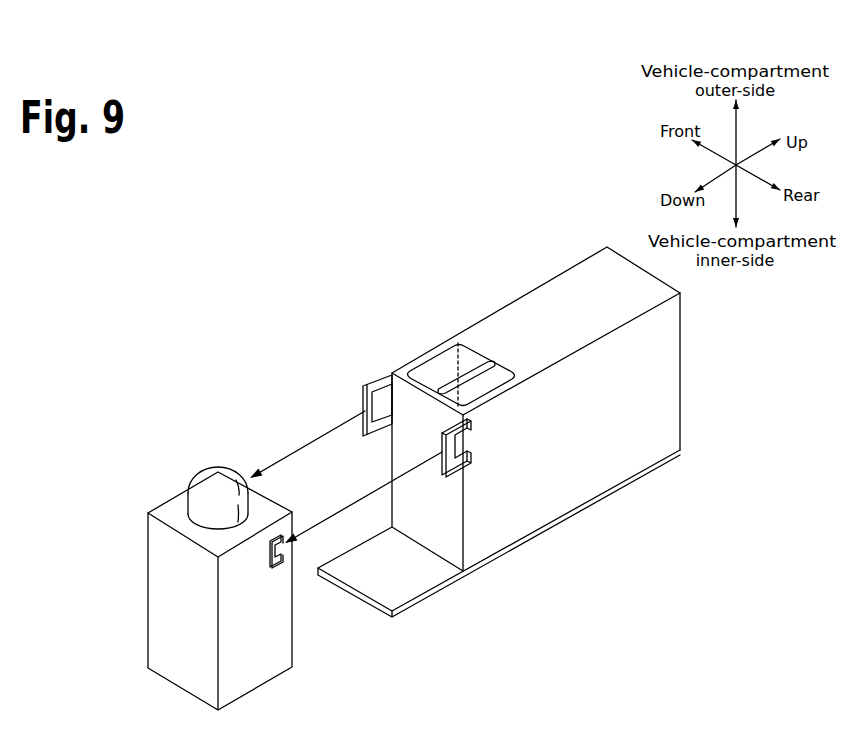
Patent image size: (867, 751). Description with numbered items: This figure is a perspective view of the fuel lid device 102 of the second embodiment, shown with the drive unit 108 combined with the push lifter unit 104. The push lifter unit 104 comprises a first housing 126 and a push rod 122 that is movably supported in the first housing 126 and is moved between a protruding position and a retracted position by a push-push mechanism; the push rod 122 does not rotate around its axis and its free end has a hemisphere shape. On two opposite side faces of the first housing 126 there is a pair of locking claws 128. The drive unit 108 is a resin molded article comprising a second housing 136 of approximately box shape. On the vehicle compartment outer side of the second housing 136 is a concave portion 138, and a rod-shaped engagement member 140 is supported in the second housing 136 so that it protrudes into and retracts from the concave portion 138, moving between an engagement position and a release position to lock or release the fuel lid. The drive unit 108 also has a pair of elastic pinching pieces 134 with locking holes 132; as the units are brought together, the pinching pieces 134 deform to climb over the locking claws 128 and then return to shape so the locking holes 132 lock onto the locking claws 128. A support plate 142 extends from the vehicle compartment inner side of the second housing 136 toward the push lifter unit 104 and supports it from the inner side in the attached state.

The fuel lid device 102 is at (303, 284).
The push lifter unit 104 is at (213, 450).
The drive unit 108 is at (403, 338).
The push rod 122 is at (207, 482).
The first housing 126 is at (162, 600).
The locking claws 128 is at (280, 566).
The locking holes 132 is at (383, 385).
The pinching pieces 134 is at (373, 423).
The second housing 136 is at (667, 412).
The concave portion 138 is at (477, 363).
The engagement member 140 is at (452, 384).
The support plate 142 is at (395, 593).